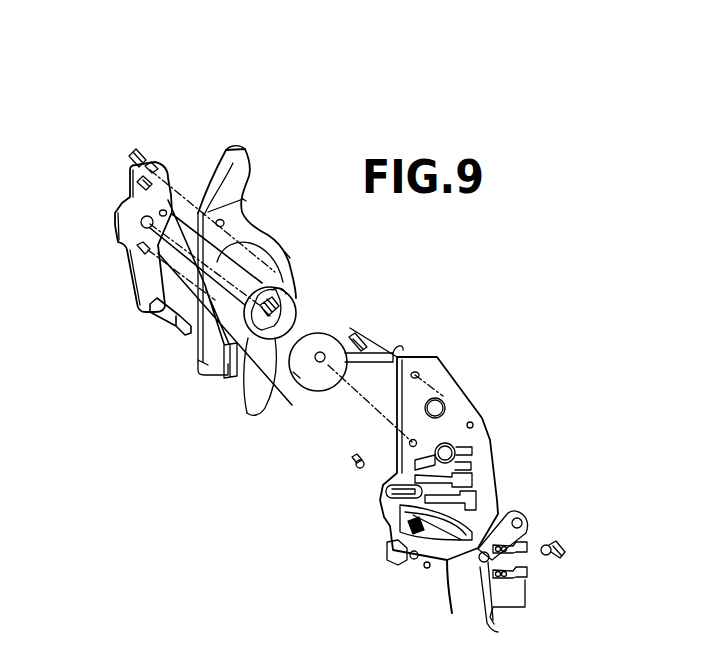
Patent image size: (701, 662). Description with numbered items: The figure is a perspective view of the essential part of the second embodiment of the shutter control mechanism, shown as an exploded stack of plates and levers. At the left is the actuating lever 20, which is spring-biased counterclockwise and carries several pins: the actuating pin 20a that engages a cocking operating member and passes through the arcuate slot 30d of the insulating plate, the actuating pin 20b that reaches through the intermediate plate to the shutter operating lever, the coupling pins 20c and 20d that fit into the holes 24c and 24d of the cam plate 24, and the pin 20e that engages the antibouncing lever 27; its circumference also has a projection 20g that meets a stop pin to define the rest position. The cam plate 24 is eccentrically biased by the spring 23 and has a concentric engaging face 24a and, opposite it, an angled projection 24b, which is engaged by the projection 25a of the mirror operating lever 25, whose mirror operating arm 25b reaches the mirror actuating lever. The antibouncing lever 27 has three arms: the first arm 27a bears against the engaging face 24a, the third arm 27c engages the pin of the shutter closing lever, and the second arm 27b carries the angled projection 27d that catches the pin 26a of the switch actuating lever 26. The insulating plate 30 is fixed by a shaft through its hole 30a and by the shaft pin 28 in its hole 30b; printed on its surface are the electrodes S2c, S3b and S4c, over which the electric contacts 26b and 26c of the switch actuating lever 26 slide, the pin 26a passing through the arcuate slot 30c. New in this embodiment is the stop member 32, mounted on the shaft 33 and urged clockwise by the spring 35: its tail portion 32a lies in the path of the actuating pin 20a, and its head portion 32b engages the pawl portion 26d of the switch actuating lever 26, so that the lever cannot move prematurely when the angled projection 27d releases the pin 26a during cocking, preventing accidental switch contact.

The actuating lever 20 is at (136, 300).
The actuating pin 20a is at (168, 323).
The actuating pin 20b is at (139, 157).
The coupling pin 20c is at (136, 252).
The coupling pin 20d is at (182, 184).
The pin 20e is at (126, 200).
The projection 20g is at (245, 200).
The spring 23 is at (290, 318).
The cam plate 24 is at (296, 320).
The engaging face 24a is at (283, 291).
The angled projection 24b is at (252, 410).
The hole 24c is at (276, 404).
The hole 24d is at (284, 298).
The mirror operating lever 25 is at (365, 338).
The projection 25a is at (318, 368).
The mirror operating arm 25b is at (403, 352).
The switch actuating lever 26 is at (488, 626).
The pin 26a is at (355, 467).
The electric contact 26b is at (530, 545).
The electric contact 26c is at (530, 577).
The pawl portion 26d is at (500, 617).
The antibouncing lever 27 is at (260, 230).
The first arm 27a is at (287, 254).
The second arm 27b is at (206, 364).
The third arm 27c is at (249, 160).
The angled projection 27d is at (228, 380).
The shaft pin 28 is at (566, 554).
The insulating plate 30 is at (462, 405).
The hole 30a is at (421, 373).
The hole 30b is at (409, 442).
The arcuate slot 30c is at (386, 490).
The arcuate slot 30d is at (455, 605).
The stop member 32 is at (393, 563).
The tail portion 32a is at (400, 528).
The head portion 32b is at (386, 553).
The shaft 33 is at (413, 560).
The spring 35 is at (428, 569).
The electrodes of switch S2 S2c is at (477, 500).
The electrodes of switch S3 S3b is at (472, 450).
The electrodes of switch S4 S4c is at (472, 481).